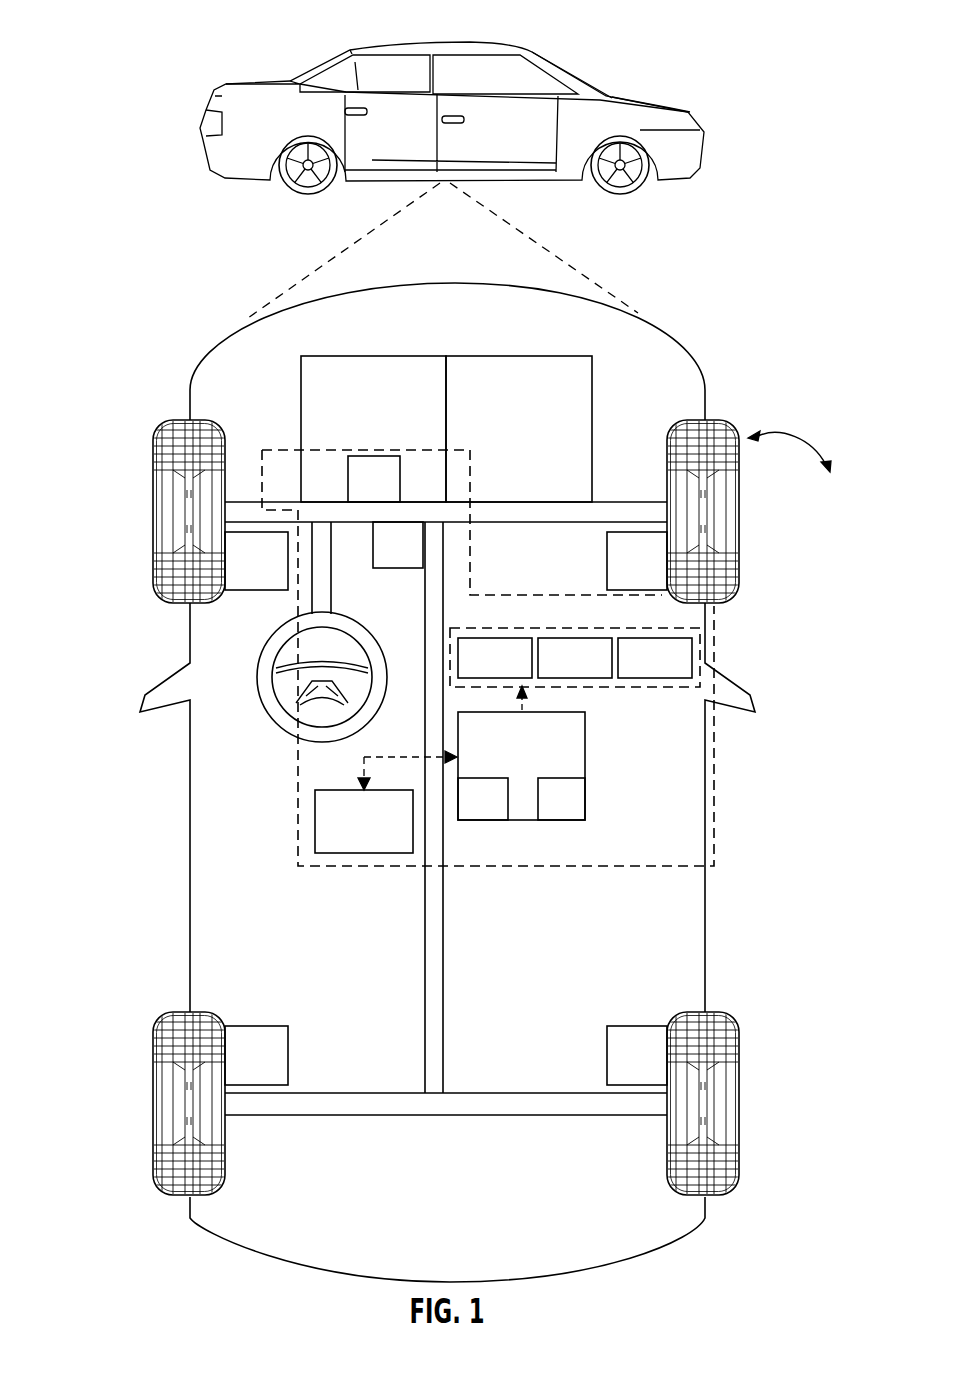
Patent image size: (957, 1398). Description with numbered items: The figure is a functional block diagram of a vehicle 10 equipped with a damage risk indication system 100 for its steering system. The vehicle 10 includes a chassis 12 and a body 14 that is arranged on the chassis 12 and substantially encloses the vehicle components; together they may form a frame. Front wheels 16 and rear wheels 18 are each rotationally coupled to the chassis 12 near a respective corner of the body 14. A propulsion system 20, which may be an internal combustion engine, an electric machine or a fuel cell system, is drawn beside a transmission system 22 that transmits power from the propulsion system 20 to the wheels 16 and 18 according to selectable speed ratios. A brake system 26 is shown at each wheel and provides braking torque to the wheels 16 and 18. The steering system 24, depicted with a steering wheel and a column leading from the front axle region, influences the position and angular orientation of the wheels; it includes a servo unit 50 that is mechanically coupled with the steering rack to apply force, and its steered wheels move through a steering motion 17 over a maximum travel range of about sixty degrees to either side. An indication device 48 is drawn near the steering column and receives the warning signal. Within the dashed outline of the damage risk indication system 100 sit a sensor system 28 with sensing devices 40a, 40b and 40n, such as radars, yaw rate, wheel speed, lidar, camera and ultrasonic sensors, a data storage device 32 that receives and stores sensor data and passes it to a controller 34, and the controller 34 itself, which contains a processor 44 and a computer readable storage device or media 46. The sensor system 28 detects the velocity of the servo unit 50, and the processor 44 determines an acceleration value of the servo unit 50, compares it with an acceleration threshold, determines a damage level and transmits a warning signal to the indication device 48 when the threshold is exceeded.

The vehicle 10 is at (332, 69).
The chassis 12 is at (425, 935).
The body 14 is at (190, 890).
The front wheels 16 is at (153, 512).
The steering motion 17 is at (796, 440).
The rear wheels 18 is at (153, 1105).
The propulsion system 20 is at (360, 443).
The transmission system 22 is at (506, 443).
The steering system 24 is at (337, 587).
The brake system 26 is at (242, 576).
The sensor system 28 is at (538, 627).
The data storage device 32 is at (377, 834).
The controller 34 is at (537, 763).
The sensing device 40a is at (473, 671).
The sensing device 40b is at (553, 671).
The sensing device 40n is at (635, 671).
The processor 44 is at (468, 814).
The computer readable storage device or media 46 is at (547, 814).
The indication device 48 is at (385, 563).
The servo unit 50 is at (360, 494).
The damage risk indication system 100 is at (718, 648).